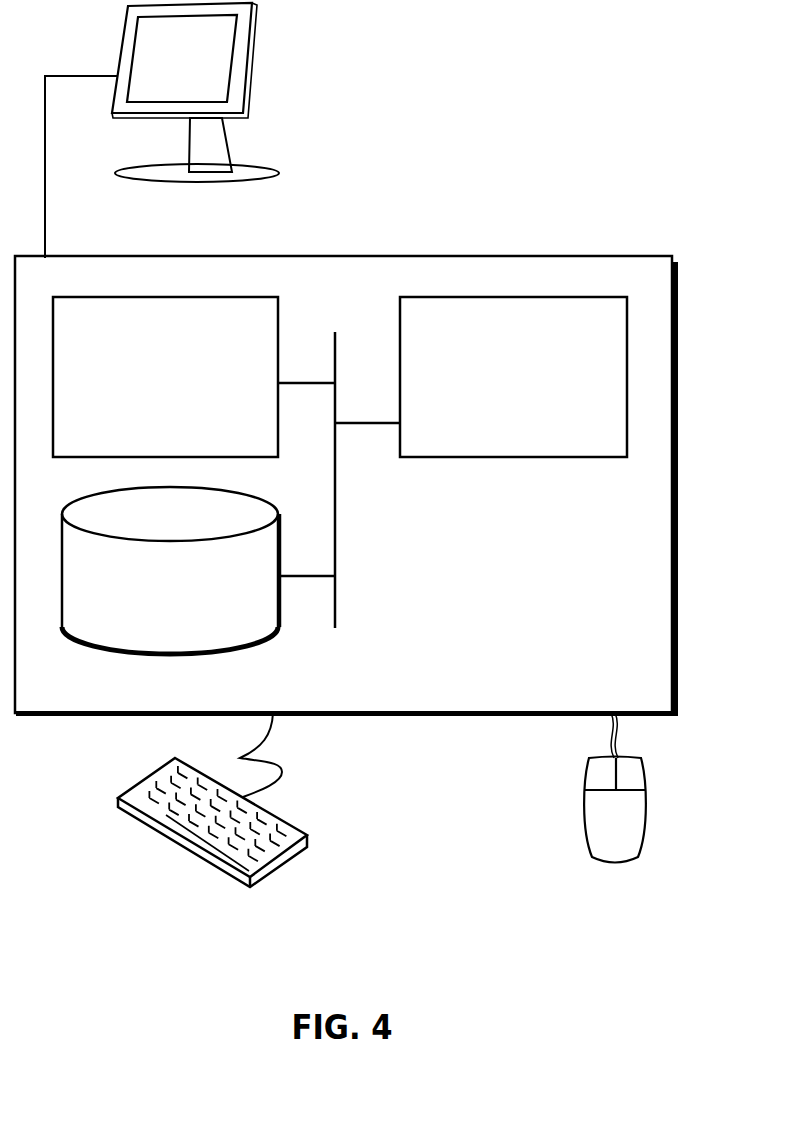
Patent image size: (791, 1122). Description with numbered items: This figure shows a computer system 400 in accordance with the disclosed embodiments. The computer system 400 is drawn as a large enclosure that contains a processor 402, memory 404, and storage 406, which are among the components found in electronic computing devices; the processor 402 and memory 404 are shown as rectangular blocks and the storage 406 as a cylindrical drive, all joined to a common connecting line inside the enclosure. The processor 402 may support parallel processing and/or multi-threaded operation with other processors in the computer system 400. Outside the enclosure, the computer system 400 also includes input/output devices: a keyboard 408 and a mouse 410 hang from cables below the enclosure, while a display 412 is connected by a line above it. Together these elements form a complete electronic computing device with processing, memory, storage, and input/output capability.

The computer system 400 is at (390, 235).
The processor 402 is at (496, 390).
The memory 404 is at (146, 390).
The storage 406 is at (152, 600).
The keyboard 408 is at (137, 822).
The mouse 410 is at (594, 830).
The display 412 is at (162, 130).